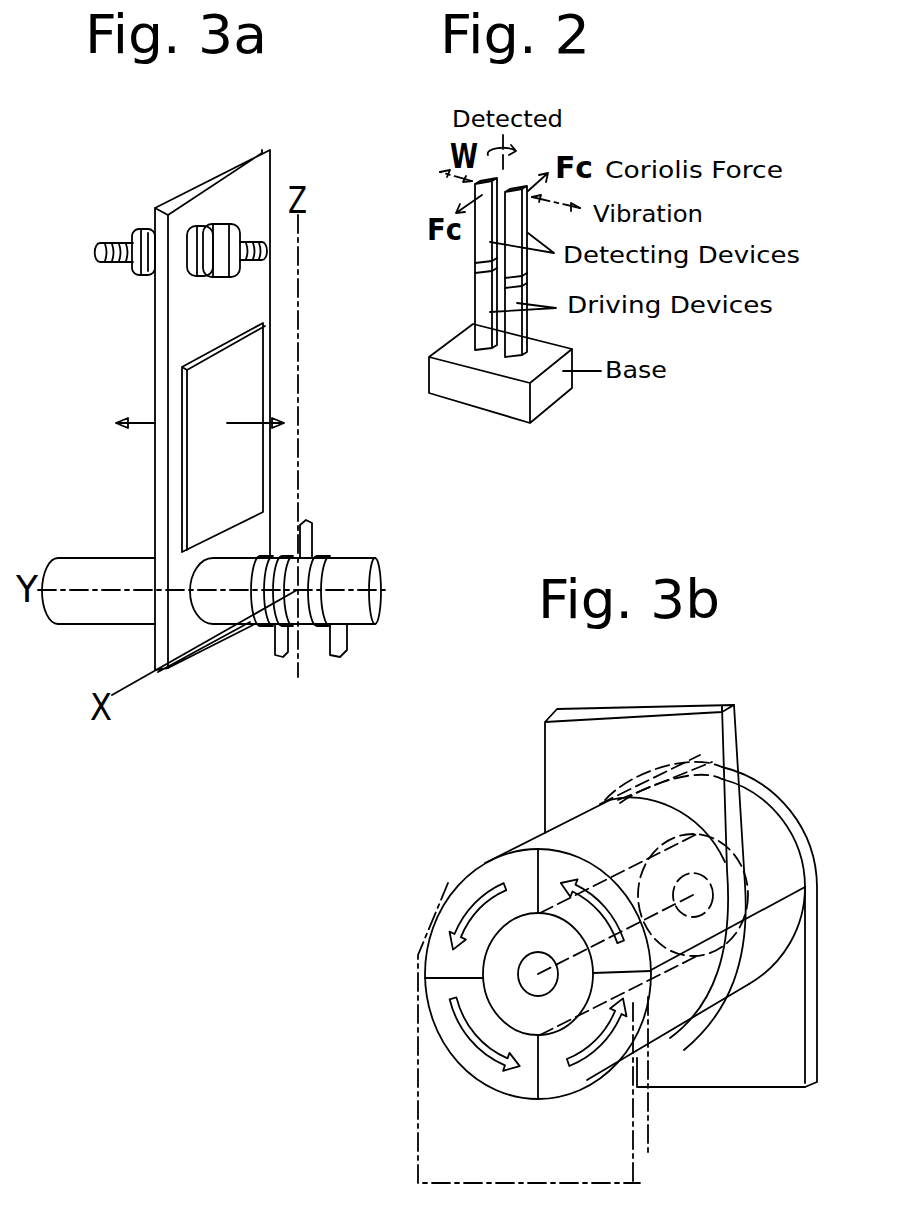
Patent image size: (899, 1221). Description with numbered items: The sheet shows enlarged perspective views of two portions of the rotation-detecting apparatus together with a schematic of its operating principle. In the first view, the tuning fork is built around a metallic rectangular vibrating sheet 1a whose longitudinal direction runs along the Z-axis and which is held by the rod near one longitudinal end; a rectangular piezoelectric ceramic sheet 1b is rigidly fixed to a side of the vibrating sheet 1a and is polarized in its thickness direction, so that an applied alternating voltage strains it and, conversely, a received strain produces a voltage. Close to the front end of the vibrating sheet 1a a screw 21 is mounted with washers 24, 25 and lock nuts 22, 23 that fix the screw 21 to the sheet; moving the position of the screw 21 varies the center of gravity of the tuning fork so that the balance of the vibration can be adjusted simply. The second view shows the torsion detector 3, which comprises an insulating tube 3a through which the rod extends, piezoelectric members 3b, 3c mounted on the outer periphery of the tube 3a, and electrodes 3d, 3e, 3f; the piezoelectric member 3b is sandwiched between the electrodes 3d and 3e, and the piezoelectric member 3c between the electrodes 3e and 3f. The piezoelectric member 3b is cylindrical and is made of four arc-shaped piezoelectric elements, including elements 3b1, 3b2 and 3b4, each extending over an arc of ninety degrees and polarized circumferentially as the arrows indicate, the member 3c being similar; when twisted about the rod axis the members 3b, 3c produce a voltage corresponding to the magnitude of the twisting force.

In FIG. 3A, the vibrating sheet 1a is at (210, 182).
In FIG. 3A, the piezoelectric ceramic sheet 1b is at (255, 376).
In FIG. 3A, the torsion detector 3 is at (328, 551).
In FIG. 3A, the screw 21 is at (108, 275).
In FIG. 3A, the lock nut 22 is at (140, 232).
In FIG. 3A, the lock nut 23 is at (238, 225).
In FIG. 3A, the washer 24 is at (144, 286).
In FIG. 3A, the spacer 25 is at (190, 230).
In FIG. 3B, the insulating tube 3a is at (487, 962).
In FIG. 3B, the piezoelectric member 3b is at (456, 1073).
In FIG. 3B, the arc-shaped piezoelectric element 3b1 is at (492, 873).
In FIG. 3B, the arc-shaped piezoelectric element 3b2 is at (437, 1017).
In FIG. 3B, the arc-shaped piezoelectric element 3b4 is at (563, 867).
In FIG. 3B, the piezoelectric member 3c is at (765, 819).
In FIG. 3B, the electrode 3d is at (640, 1158).
In FIG. 3B, the electrode 3e is at (703, 707).
In FIG. 3B, the electrode 3f is at (772, 1065).